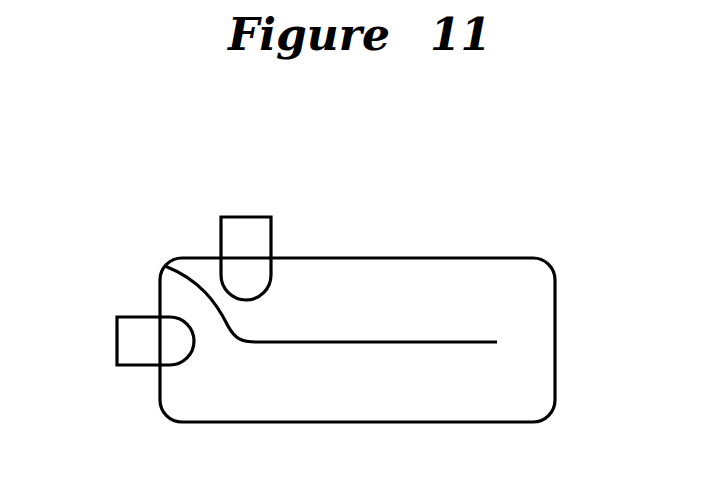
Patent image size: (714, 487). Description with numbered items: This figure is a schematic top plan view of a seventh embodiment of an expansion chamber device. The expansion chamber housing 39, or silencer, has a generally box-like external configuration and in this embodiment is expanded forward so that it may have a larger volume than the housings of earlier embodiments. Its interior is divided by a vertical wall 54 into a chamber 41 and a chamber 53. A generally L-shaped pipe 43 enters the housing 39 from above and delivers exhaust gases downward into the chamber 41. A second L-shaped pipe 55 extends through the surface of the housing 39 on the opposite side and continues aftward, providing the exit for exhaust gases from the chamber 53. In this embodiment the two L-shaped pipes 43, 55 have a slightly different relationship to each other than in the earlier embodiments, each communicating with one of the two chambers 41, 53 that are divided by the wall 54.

The expansion chamber housing 39 is at (555, 276).
The chamber 41 is at (341, 306).
The L-shaped pipe 43 is at (271, 233).
The chamber 53 is at (317, 400).
The vertical wall 54 is at (442, 342).
The second L-shaped pipe 55 is at (127, 365).